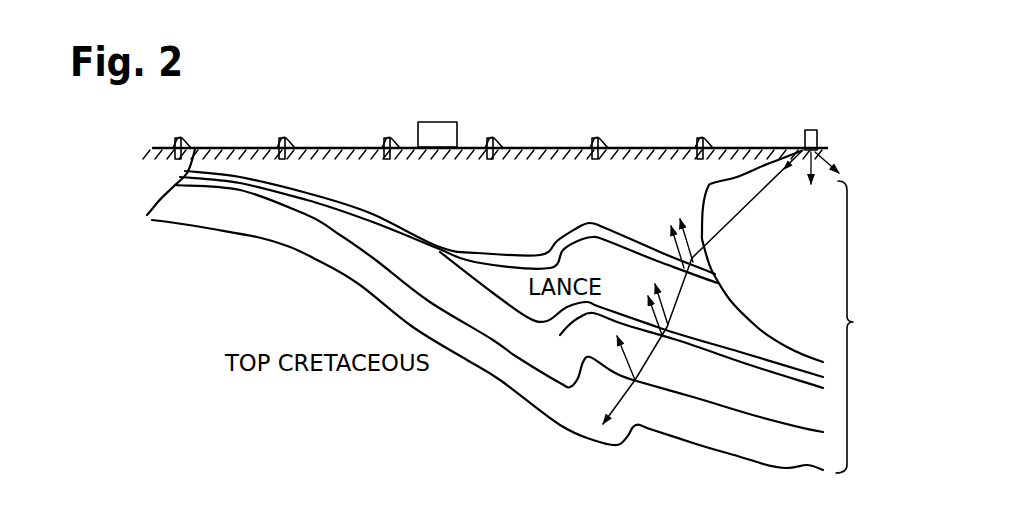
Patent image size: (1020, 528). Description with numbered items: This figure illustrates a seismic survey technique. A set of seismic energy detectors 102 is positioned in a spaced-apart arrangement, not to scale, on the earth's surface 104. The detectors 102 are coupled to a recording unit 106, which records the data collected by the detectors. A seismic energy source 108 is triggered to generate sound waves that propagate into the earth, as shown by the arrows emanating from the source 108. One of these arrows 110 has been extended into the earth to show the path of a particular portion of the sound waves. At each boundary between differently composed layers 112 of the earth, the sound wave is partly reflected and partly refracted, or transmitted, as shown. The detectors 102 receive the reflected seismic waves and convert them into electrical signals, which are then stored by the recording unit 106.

The seismic energy detectors 102 is at (273, 139).
The earth's surface 104 is at (172, 147).
The recording unit 106 is at (440, 122).
The seismic energy source 108 is at (808, 129).
The arrow 110 is at (614, 430).
The differently composed layers of the earth 112 is at (864, 327).